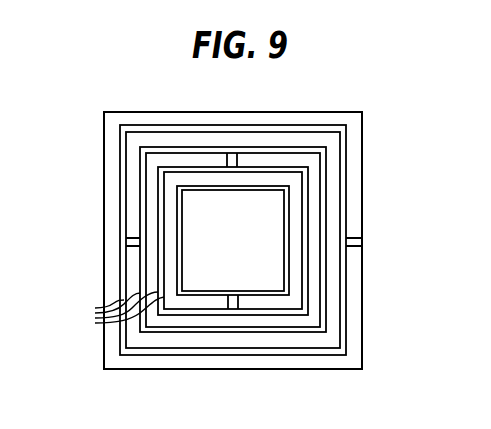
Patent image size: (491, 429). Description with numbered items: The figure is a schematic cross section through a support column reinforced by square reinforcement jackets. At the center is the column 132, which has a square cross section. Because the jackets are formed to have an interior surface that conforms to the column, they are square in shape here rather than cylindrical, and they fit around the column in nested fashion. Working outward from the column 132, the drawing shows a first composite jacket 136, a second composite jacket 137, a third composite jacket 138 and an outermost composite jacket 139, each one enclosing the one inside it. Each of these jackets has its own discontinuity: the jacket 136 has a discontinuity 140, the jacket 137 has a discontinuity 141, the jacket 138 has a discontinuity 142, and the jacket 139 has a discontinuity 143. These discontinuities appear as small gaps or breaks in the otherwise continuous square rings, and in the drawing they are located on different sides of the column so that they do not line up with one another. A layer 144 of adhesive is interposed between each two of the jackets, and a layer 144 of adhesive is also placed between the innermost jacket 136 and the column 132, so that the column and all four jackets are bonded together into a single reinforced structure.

The column 132 is at (258, 218).
The composite jacket 136 is at (295, 264).
The composite jacket 137 is at (312, 298).
The composite jacket 138 is at (332, 332).
The composite jacket 139 is at (352, 360).
The discontinuity 140 is at (235, 305).
The discontinuity 141 is at (233, 157).
The discontinuity 142 is at (127, 240).
The discontinuity 143 is at (350, 240).
The layer of adhesive 144 is at (108, 310).